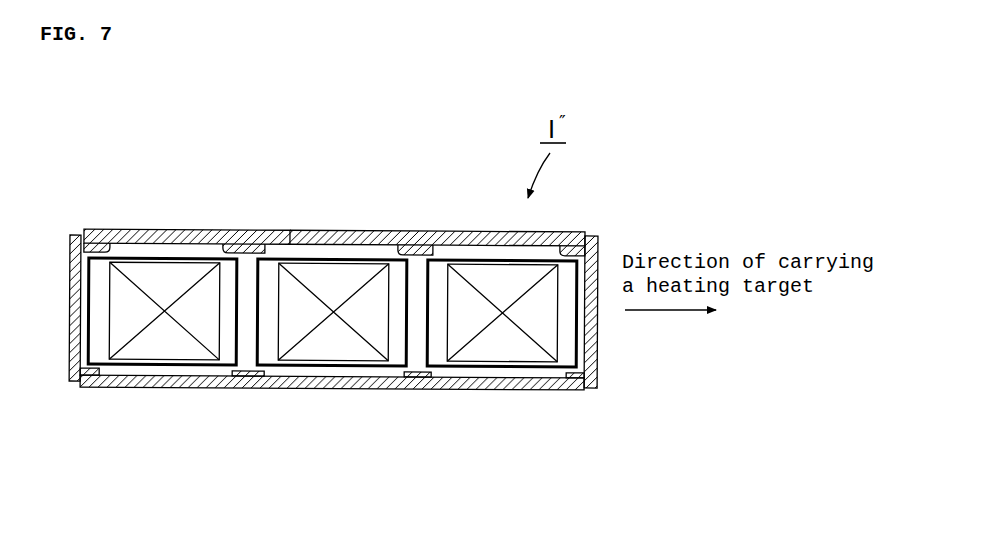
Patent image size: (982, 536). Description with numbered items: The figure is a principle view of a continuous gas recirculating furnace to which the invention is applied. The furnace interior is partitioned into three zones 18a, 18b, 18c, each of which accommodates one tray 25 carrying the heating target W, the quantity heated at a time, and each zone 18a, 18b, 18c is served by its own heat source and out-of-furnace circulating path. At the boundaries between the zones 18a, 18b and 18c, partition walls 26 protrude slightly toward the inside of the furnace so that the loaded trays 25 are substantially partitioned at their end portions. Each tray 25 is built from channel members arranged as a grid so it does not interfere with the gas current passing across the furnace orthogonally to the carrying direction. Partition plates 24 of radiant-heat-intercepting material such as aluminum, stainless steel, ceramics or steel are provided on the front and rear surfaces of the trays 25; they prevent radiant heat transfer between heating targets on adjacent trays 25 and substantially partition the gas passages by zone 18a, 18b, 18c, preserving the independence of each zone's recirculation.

The zone 18a is at (156, 245).
The zone 18b is at (318, 257).
The zone 18c is at (478, 256).
The partition plate 24 is at (582, 338).
The tray 25 is at (160, 355).
The partition wall 26 is at (103, 250).